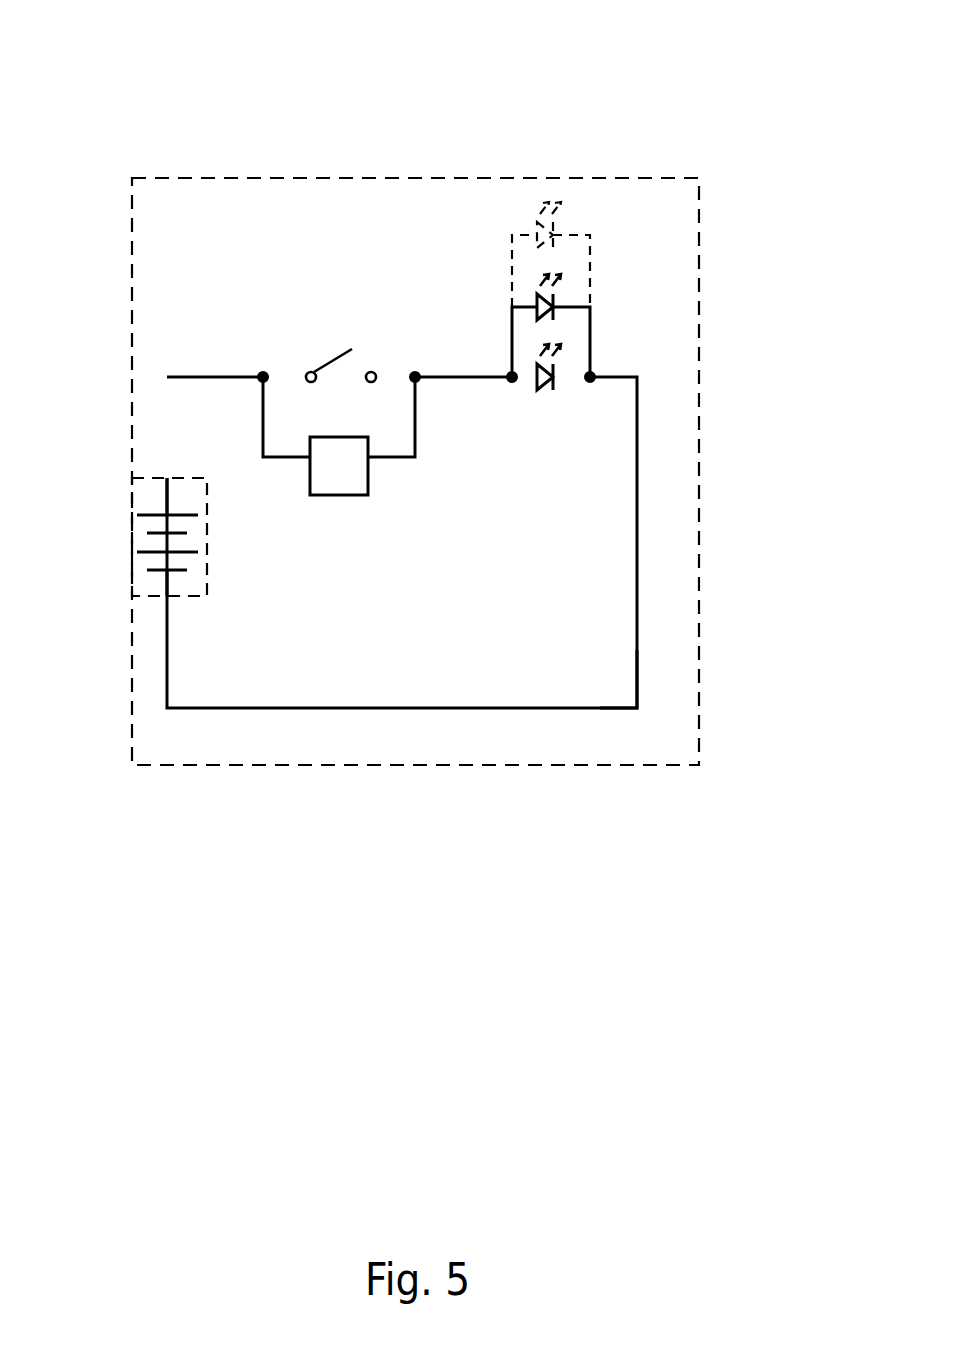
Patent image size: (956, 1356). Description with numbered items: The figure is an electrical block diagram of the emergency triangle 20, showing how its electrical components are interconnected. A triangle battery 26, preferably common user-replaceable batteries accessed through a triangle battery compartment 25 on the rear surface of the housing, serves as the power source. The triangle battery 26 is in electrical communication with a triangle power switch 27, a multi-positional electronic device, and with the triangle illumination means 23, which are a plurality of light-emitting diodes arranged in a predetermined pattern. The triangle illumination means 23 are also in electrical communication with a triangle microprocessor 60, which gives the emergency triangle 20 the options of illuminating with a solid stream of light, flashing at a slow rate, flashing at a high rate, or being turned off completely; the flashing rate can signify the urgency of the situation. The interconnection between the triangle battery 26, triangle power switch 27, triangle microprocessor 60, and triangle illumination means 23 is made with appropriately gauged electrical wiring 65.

The emergency triangle 20 is at (285, 178).
The triangle illumination means 23 is at (556, 372).
The triangle battery compartment 25 is at (148, 477).
The triangle battery 26 is at (148, 563).
The triangle power switch 27 is at (322, 364).
The triangle microprocessor 60 is at (347, 485).
The electrical wiring 65 is at (637, 660).